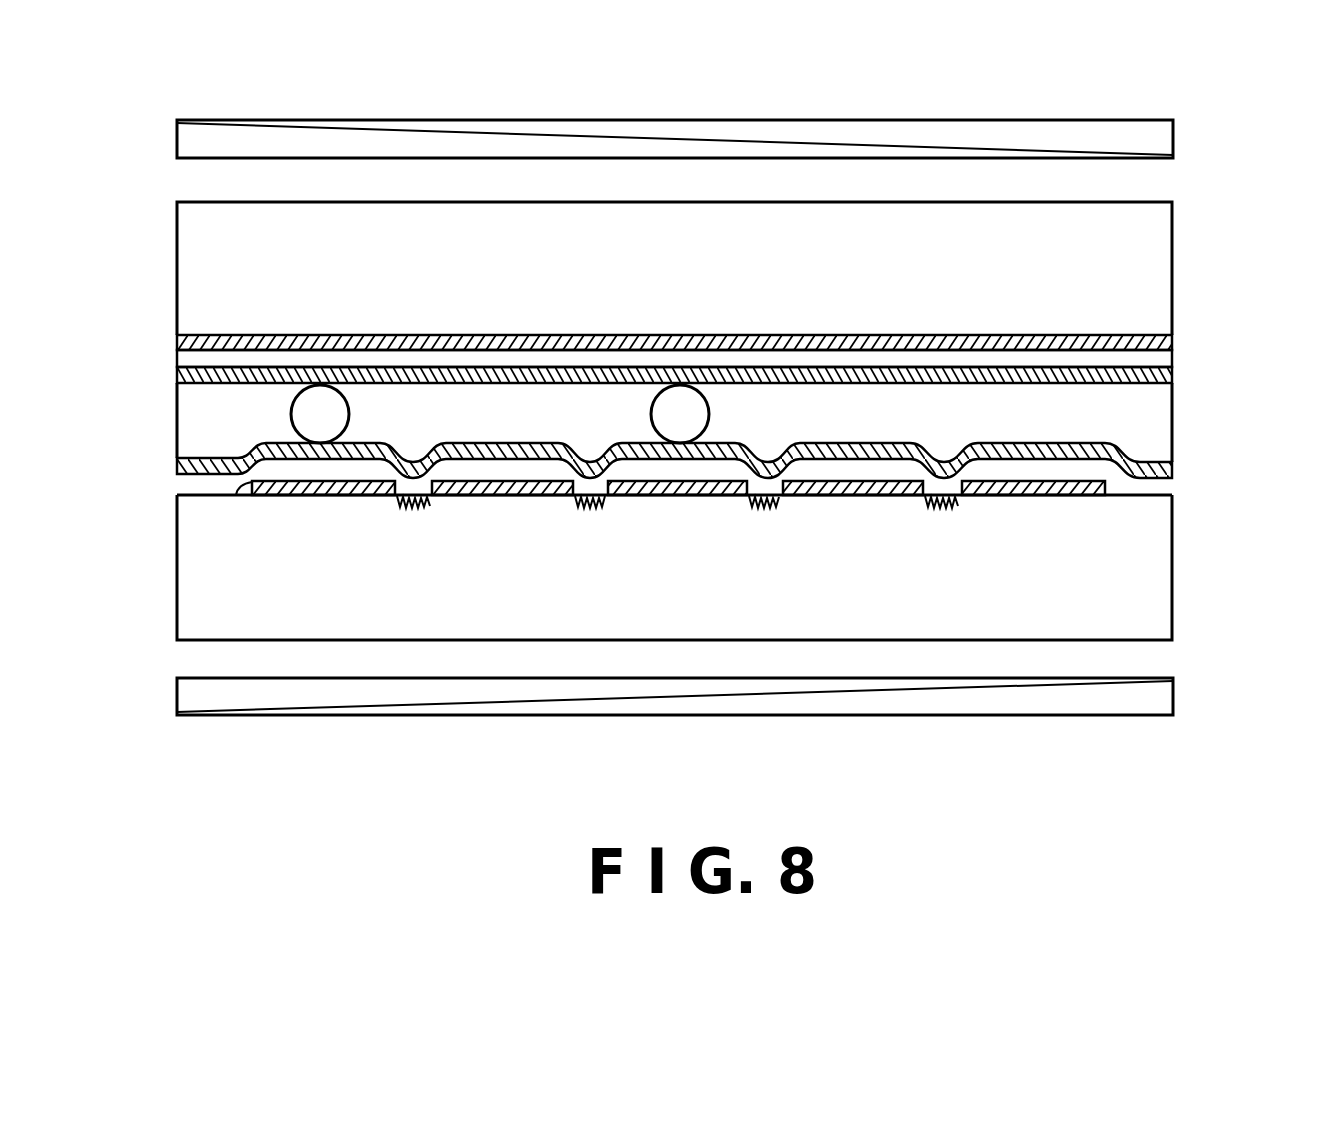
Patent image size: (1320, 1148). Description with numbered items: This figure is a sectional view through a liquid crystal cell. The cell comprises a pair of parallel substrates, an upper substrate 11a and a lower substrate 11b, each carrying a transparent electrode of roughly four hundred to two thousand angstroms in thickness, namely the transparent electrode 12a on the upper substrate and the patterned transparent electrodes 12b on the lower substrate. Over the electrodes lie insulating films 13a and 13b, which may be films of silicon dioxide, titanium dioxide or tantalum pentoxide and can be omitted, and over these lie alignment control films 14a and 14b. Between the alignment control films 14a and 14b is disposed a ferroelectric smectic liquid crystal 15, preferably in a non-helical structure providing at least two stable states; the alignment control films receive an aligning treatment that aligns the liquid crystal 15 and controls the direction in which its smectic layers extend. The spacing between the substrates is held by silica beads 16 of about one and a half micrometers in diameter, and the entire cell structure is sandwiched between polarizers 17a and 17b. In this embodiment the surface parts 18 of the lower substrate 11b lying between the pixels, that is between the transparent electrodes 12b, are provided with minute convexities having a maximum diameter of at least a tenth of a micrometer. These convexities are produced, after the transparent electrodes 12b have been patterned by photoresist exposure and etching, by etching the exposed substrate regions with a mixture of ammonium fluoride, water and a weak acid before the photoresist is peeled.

The upper substrate 11a is at (1172, 238).
The lower substrate 11b is at (1165, 580).
The transparent electrode 12a is at (1172, 343).
The transparent electrodes 12b is at (240, 485).
The insulating film 13a is at (1165, 361).
The insulating film 13b is at (1160, 485).
The alignment control film 14a is at (1172, 378).
The alignment control film 14b is at (1172, 463).
The ferroelectric smectic liquid crystal 15 is at (1160, 425).
The silica beads 16 is at (290, 418).
The polarizer 17a is at (1175, 133).
The polarizer 17b is at (1173, 688).
The surface parts 18 is at (415, 505).